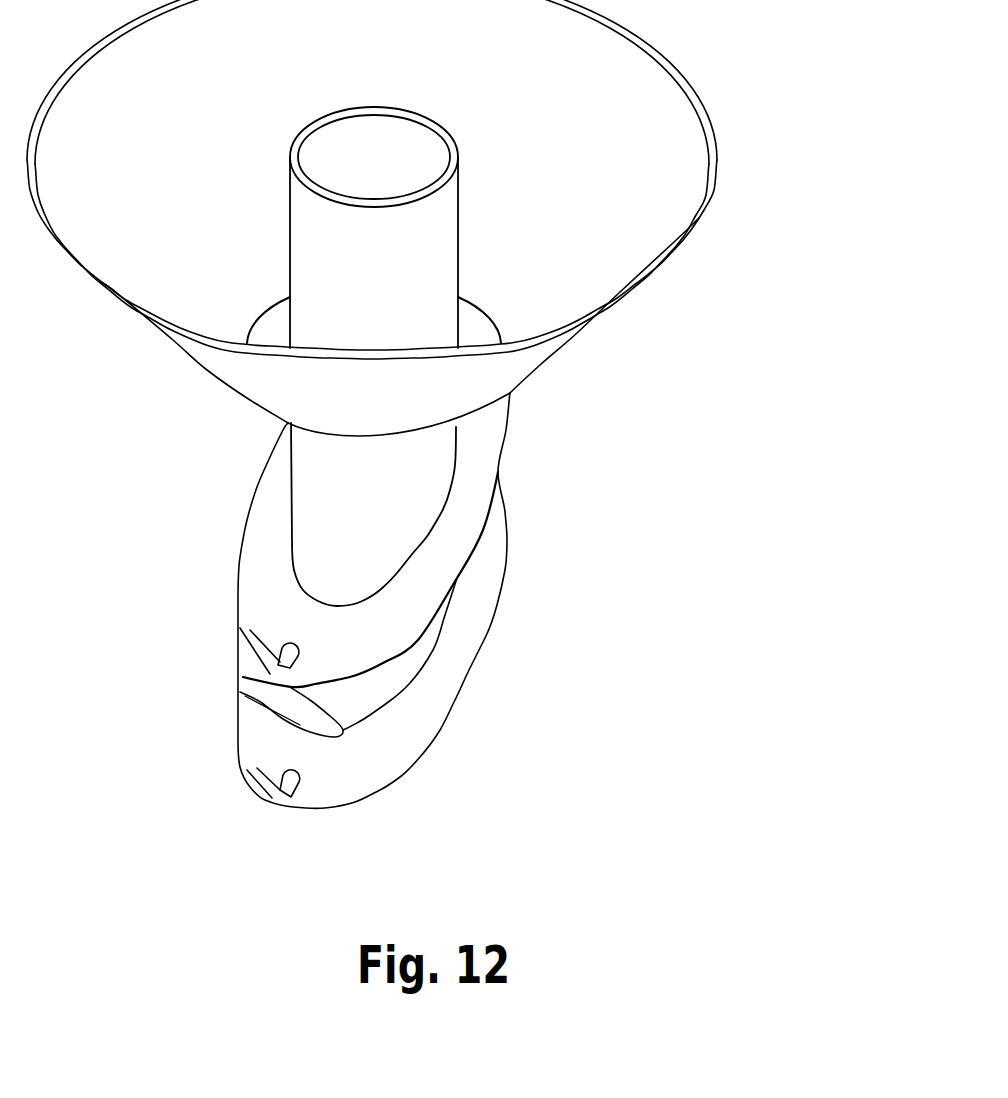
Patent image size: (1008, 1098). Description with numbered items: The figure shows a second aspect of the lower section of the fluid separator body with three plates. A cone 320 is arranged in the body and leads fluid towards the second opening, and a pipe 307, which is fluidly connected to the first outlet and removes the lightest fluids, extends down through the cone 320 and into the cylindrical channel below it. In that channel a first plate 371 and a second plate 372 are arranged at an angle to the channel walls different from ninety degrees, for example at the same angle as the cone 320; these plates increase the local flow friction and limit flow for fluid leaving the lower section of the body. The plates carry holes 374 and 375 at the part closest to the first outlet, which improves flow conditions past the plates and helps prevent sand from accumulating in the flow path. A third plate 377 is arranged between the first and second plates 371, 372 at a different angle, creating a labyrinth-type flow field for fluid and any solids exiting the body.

The cone 320 is at (647, 125).
The pipe 307 is at (422, 232).
The first plate 371 is at (487, 443).
The second plate 372 is at (468, 623).
The hole 374 is at (240, 625).
The hole 375 is at (285, 790).
The third plate 377 is at (275, 695).